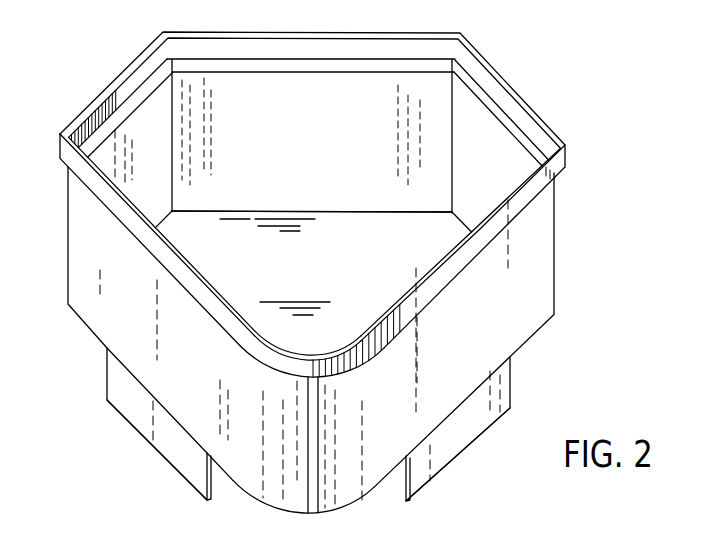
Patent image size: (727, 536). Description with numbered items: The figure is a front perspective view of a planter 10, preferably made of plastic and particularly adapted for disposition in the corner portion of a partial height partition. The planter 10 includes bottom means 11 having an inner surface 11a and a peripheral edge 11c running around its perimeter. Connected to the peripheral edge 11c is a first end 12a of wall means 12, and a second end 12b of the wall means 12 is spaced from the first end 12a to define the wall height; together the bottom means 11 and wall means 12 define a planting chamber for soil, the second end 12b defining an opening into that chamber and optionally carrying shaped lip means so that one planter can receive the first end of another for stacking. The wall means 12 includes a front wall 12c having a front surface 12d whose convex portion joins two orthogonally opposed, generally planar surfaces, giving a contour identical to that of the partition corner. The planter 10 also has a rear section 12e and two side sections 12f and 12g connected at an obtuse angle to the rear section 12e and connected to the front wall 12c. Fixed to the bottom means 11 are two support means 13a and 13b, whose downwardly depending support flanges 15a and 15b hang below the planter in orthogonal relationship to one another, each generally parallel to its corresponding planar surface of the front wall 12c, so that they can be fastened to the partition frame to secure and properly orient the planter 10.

The planter 10 is at (78, 92).
The bottom means 11 is at (353, 193).
The inner surface 11a is at (331, 270).
The peripheral edge 11c is at (242, 210).
The wall means 12 is at (532, 242).
The first end 12a is at (541, 328).
The second end 12b is at (558, 163).
The front wall 12c is at (107, 325).
The front surface 12d is at (392, 439).
The rear section 12e is at (238, 80).
The side section 12f is at (143, 112).
The side section 12g is at (475, 105).
The support means 13a is at (178, 461).
The support means 13b is at (483, 435).
The downwardly depending support flange 15a is at (133, 420).
The downwardly depending support flange 15b is at (503, 383).